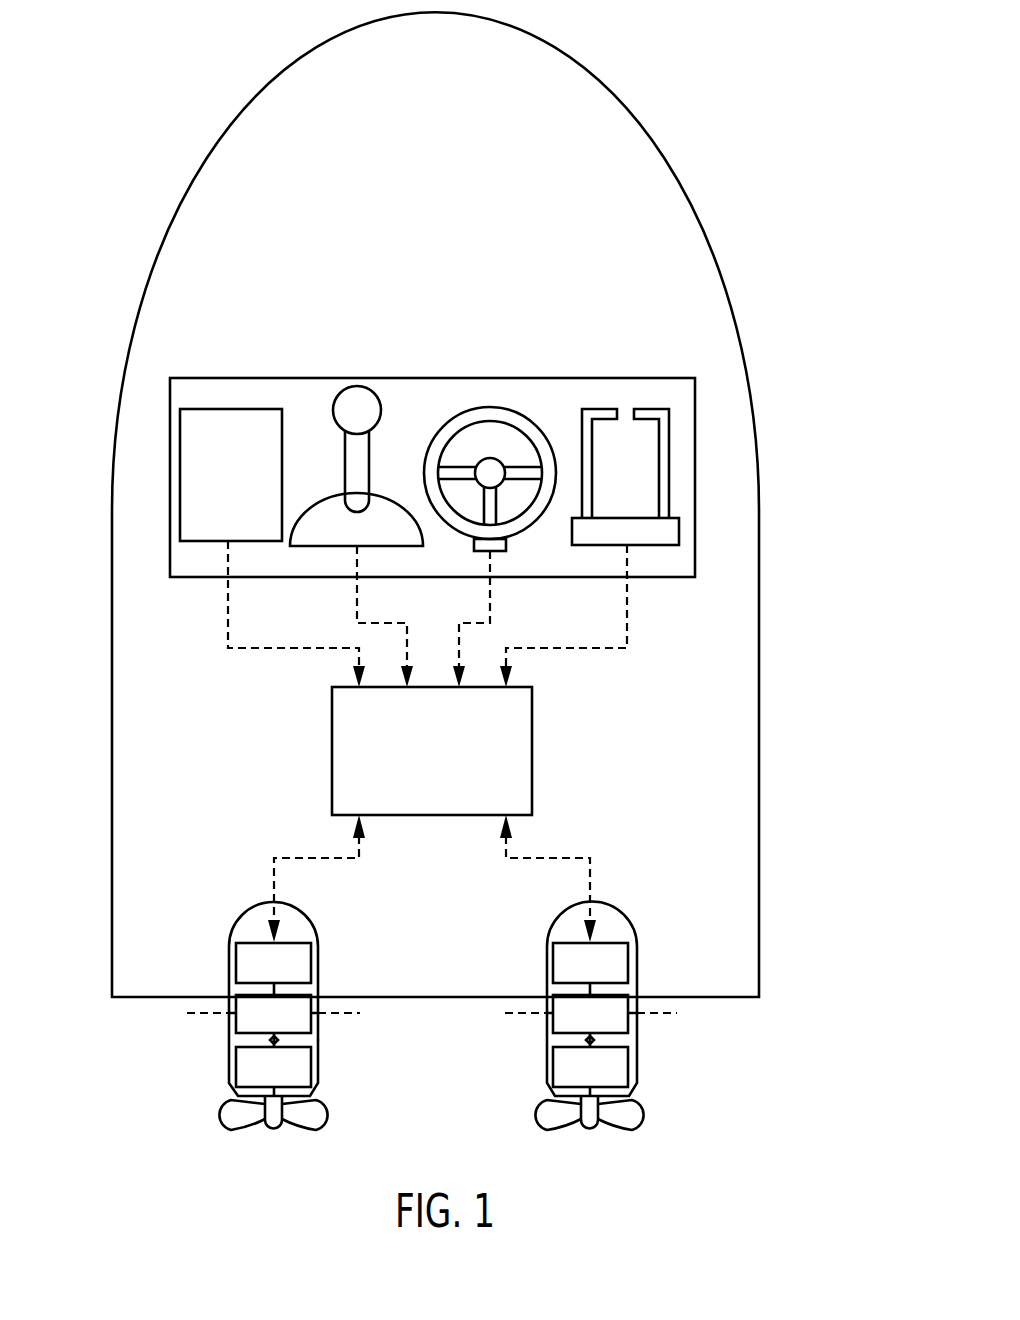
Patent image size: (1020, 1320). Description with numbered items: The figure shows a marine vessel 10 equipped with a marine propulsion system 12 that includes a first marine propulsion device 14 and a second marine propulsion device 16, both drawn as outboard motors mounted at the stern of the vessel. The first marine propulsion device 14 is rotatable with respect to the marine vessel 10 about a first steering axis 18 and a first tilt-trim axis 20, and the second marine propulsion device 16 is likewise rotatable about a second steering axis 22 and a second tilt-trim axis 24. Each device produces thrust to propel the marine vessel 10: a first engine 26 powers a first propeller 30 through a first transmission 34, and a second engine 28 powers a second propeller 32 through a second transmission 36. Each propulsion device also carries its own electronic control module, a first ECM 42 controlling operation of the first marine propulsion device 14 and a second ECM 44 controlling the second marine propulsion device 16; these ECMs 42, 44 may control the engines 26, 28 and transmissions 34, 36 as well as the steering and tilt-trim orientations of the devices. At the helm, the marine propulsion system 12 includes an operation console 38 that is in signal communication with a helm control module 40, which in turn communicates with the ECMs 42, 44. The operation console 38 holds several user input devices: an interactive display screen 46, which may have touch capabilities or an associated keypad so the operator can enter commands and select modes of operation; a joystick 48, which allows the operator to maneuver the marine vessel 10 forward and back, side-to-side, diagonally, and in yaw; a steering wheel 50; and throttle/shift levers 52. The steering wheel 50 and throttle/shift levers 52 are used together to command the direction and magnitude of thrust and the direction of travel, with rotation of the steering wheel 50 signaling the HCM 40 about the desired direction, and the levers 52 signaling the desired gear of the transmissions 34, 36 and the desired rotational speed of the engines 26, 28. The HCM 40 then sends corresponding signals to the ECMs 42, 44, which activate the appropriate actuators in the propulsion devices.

The marine vessel 10 is at (673, 170).
The marine propulsion system 12 is at (634, 803).
The first marine propulsion device 14 is at (229, 965).
The second marine propulsion device 16 is at (637, 975).
The first steering axis 18 is at (278, 1040).
The first tilt-trim axis 20 is at (338, 1012).
The second steering axis 22 is at (586, 1040).
The second tilt-trim axis 24 is at (531, 1012).
The first engine 26 is at (234, 1022).
The second engine 28 is at (630, 1022).
The first propeller 30 is at (218, 1117).
The second propeller 32 is at (647, 1117).
The first transmission 34 is at (236, 1064).
The second transmission 36 is at (630, 1064).
The operation console 38 is at (567, 377).
The helm control module 40 is at (532, 766).
The first electronic control module 42 is at (253, 942).
The second electronic control module 44 is at (572, 942).
The interactive display screen 46 is at (227, 409).
The joystick 48 is at (370, 458).
The steering wheel 50 is at (510, 412).
The throttle/shift levers 52 is at (609, 409).